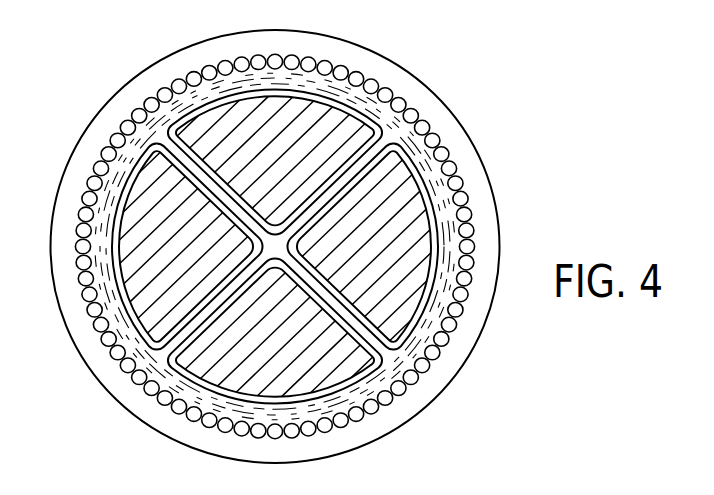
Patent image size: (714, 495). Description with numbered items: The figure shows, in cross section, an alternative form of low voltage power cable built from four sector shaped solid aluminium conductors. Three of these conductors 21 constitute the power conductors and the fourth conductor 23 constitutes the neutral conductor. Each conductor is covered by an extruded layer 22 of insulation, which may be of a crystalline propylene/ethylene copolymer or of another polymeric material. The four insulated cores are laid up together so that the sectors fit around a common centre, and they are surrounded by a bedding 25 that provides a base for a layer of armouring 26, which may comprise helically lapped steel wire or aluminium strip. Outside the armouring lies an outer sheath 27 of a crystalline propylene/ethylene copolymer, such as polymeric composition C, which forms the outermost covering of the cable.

The power conductor 21 is at (407, 265).
The extruded layer of insulation 22 is at (417, 163).
The neutral conductor 23 is at (342, 117).
The bedding 25 is at (447, 174).
The layer of armouring 26 is at (468, 257).
The outer sheath 27 is at (452, 357).